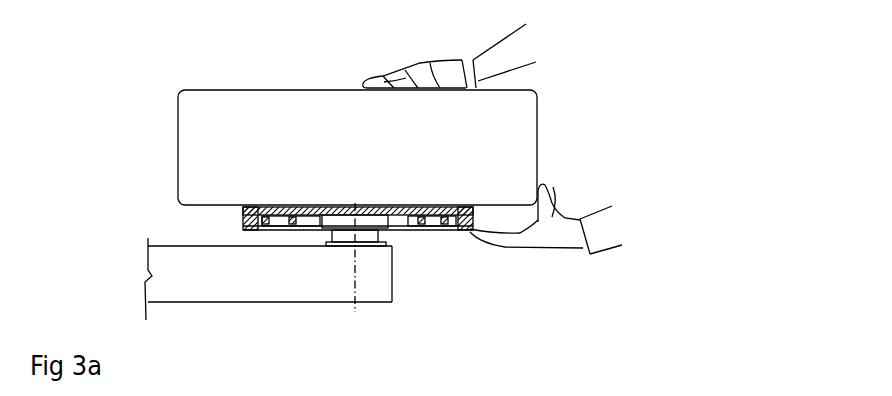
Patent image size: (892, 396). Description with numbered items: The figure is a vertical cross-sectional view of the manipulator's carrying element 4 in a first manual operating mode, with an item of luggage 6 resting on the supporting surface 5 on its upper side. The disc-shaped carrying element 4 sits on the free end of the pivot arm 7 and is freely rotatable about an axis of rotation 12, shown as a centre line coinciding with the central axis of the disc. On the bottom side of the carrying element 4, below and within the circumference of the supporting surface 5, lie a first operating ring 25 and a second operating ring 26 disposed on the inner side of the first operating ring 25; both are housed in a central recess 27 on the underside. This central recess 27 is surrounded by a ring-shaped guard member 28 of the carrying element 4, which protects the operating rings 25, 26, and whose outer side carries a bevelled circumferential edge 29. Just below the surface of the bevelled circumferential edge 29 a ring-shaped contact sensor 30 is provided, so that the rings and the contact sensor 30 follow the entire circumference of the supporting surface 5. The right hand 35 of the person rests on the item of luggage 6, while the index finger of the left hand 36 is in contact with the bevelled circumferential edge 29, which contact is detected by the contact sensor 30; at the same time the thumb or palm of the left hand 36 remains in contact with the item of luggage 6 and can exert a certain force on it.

The carrying element 4 is at (302, 212).
The supporting surface 5 is at (331, 202).
The item of luggage 6 is at (190, 112).
The pivot arm 7 is at (294, 285).
The axis of rotation 12 is at (357, 262).
The first operating ring 25 is at (444, 226).
The second operating ring 26 is at (420, 228).
The central recess 27 is at (313, 240).
The guard member 28 is at (254, 212).
The bevelled circumferential edge 29 is at (243, 229).
The contact sensor 30 is at (256, 212).
The right hand 35 is at (441, 64).
The left hand 36 is at (552, 215).